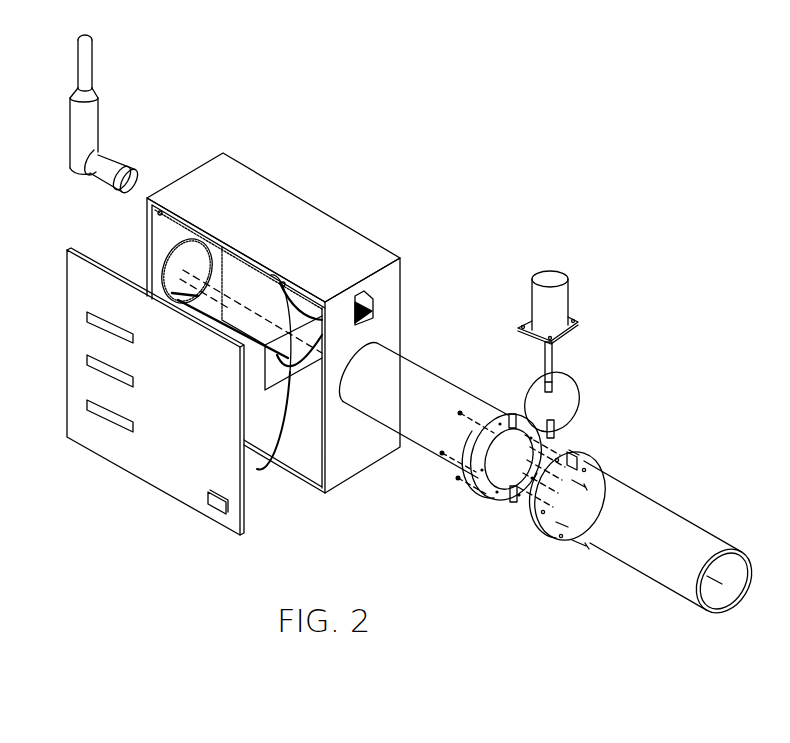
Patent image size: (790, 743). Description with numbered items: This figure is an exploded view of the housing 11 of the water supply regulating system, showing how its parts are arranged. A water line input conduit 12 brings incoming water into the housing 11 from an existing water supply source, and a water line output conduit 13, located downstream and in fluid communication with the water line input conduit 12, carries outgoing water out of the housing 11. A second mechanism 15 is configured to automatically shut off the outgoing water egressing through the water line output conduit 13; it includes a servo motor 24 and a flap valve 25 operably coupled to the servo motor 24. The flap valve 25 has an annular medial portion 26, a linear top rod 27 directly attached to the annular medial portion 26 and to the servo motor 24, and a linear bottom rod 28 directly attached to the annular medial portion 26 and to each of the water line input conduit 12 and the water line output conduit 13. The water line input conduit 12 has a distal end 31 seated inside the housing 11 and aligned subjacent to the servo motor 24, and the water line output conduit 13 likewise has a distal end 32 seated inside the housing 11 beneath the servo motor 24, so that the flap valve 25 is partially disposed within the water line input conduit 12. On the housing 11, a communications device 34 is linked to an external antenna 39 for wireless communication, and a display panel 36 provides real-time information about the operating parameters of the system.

The housing 11 is at (250, 185).
The water line input conduit 12 is at (642, 592).
The water line output conduit 13 is at (446, 366).
The second mechanism 15 is at (601, 324).
The servo motor 24 is at (562, 280).
The flap valve 25 is at (587, 407).
The annular medial portion 26 is at (577, 392).
The linear top rod 27 is at (553, 358).
The linear bottom rod 28 is at (555, 436).
The distal end of water line input conduit 31 is at (600, 463).
The distal end of water line output conduit 32 is at (478, 482).
The communications device 34 is at (370, 297).
The display panel 36 is at (78, 331).
The external antenna 39 is at (87, 72).